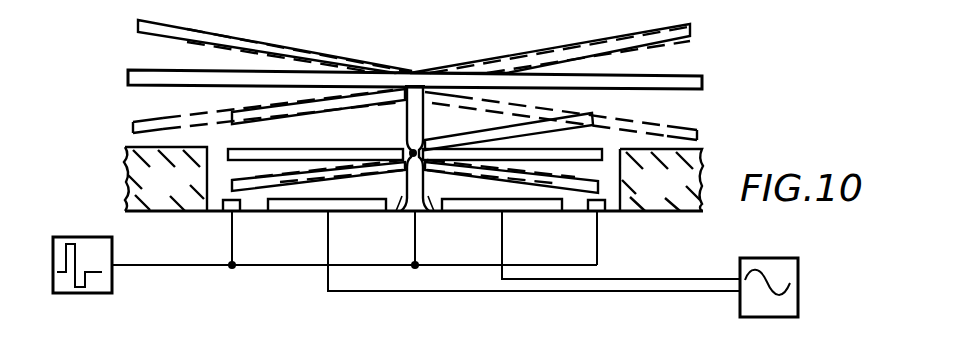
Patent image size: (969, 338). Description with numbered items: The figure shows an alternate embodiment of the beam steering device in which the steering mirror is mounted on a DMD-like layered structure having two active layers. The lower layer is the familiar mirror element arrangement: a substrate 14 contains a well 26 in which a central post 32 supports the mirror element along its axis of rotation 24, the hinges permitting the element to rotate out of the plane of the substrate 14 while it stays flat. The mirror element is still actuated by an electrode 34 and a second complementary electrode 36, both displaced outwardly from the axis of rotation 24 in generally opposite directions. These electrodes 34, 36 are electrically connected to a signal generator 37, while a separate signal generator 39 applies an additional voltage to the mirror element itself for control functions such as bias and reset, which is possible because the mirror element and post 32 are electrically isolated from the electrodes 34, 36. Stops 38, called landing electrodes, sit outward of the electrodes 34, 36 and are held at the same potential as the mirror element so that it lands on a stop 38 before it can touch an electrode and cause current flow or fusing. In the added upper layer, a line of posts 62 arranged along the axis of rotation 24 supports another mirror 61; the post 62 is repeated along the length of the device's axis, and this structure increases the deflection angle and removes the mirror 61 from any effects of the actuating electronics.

The substrate 14 is at (182, 190).
The axis of rotation 24 is at (411, 150).
The well 26 is at (478, 191).
The central post 32 is at (404, 212).
The electrode 34 is at (527, 212).
The second complementary electrode 36 is at (300, 211).
The signal generator 37 is at (786, 258).
The stop 38 is at (228, 212).
The signal generator 39 is at (90, 237).
The mirror 61 is at (675, 72).
The post 62 is at (417, 80).